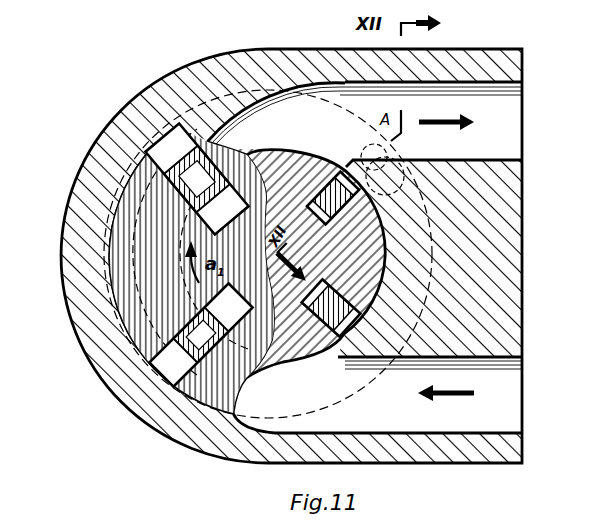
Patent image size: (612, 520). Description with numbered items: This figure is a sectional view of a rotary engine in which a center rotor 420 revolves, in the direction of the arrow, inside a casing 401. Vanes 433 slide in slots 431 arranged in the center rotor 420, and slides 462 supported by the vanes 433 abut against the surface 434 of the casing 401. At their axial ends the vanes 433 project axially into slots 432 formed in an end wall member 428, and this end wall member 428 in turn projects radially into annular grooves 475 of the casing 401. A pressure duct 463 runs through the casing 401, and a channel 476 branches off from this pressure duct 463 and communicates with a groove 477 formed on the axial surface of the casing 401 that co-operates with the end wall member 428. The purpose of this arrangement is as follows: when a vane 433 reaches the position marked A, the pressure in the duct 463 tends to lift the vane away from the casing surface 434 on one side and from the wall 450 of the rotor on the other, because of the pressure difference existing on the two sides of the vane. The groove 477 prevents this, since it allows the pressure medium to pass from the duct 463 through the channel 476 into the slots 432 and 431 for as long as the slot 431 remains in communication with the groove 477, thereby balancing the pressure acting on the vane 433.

The casing 401 is at (506, 315).
The center rotor 420 is at (366, 247).
The end wall member 428 is at (125, 236).
The slot 431 is at (356, 217).
The slot 432 is at (233, 210).
The vane 433 is at (318, 195).
The surface of the casing 434 is at (376, 292).
The wall of the rotor 450 is at (285, 160).
The slide 462 is at (318, 157).
The pressure duct 463 is at (506, 121).
The annular groove 475 is at (120, 170).
The channel 476 is at (396, 150).
The groove 477 is at (409, 186).